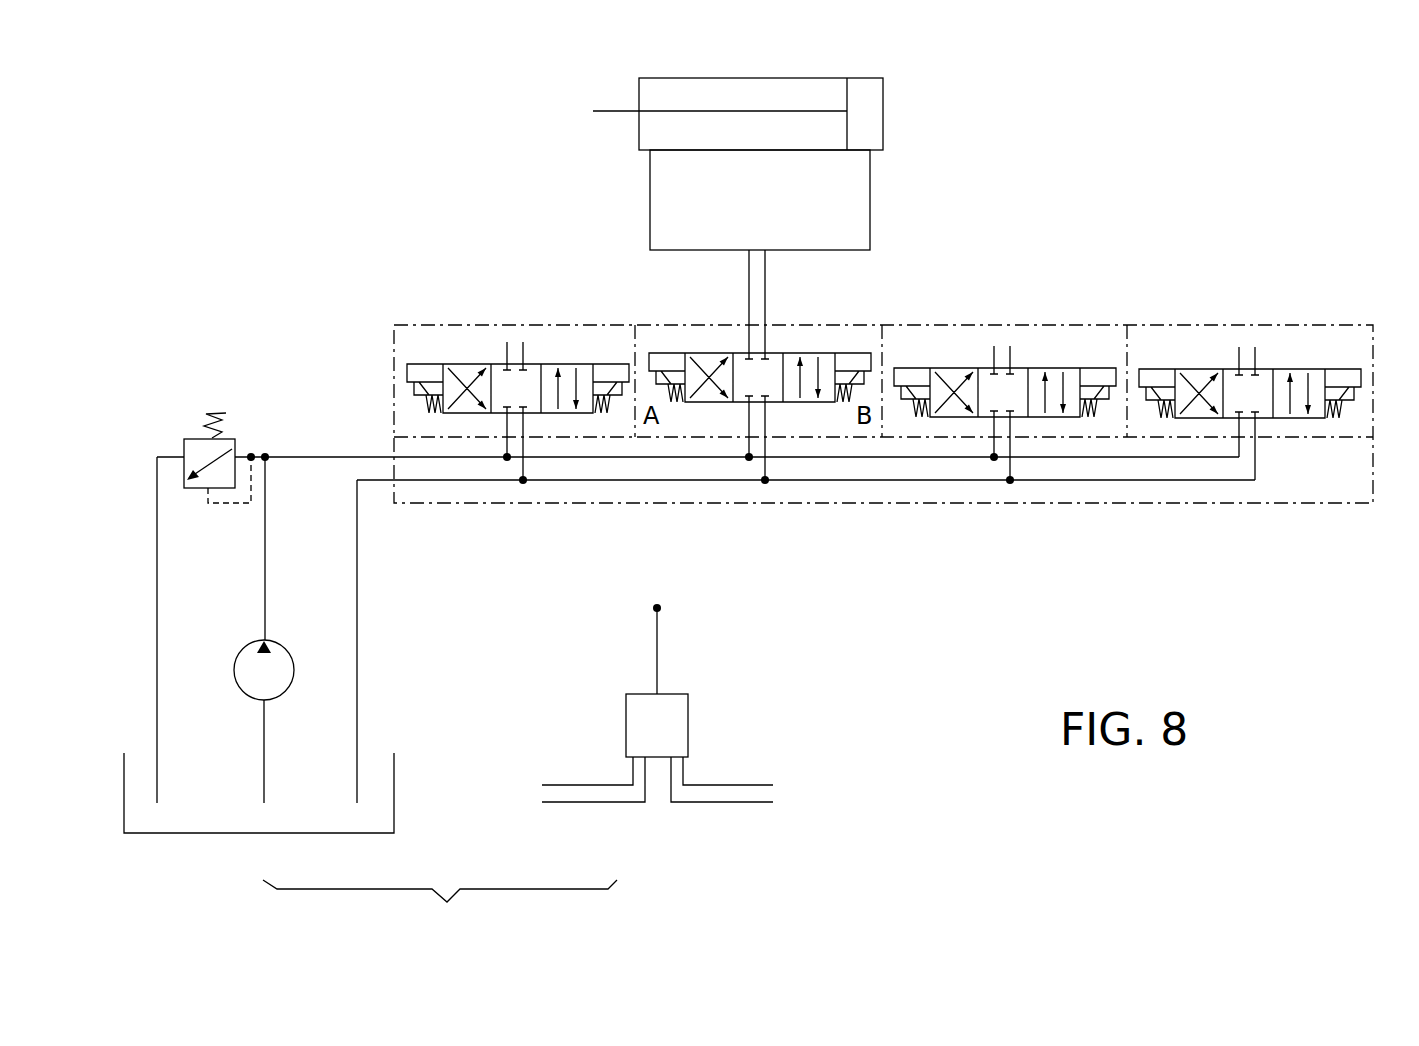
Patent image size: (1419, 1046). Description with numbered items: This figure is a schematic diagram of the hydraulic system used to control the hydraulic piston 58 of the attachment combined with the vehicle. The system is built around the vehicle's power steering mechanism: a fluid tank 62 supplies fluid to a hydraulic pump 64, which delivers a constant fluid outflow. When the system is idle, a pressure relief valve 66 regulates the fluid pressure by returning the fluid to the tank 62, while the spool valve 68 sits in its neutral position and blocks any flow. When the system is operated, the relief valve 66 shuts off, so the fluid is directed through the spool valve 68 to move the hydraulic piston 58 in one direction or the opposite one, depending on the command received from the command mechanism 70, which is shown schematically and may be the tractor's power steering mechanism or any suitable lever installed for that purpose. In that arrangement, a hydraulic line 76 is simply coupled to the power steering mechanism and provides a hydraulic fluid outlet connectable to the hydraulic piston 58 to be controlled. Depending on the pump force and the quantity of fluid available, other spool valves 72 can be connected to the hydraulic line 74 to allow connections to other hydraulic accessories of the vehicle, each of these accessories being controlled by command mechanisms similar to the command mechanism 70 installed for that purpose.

The hydraulic piston 58 is at (817, 95).
The fluid tank 62 is at (308, 835).
The hydraulic pump 64 is at (284, 668).
The pressure relief valve 66 is at (232, 452).
The spool valve 68 is at (676, 332).
The command mechanism 70 is at (682, 723).
The spool valves 72 is at (433, 359).
The hydraulic line 74 is at (870, 458).
The hydraulic line 76 is at (770, 250).